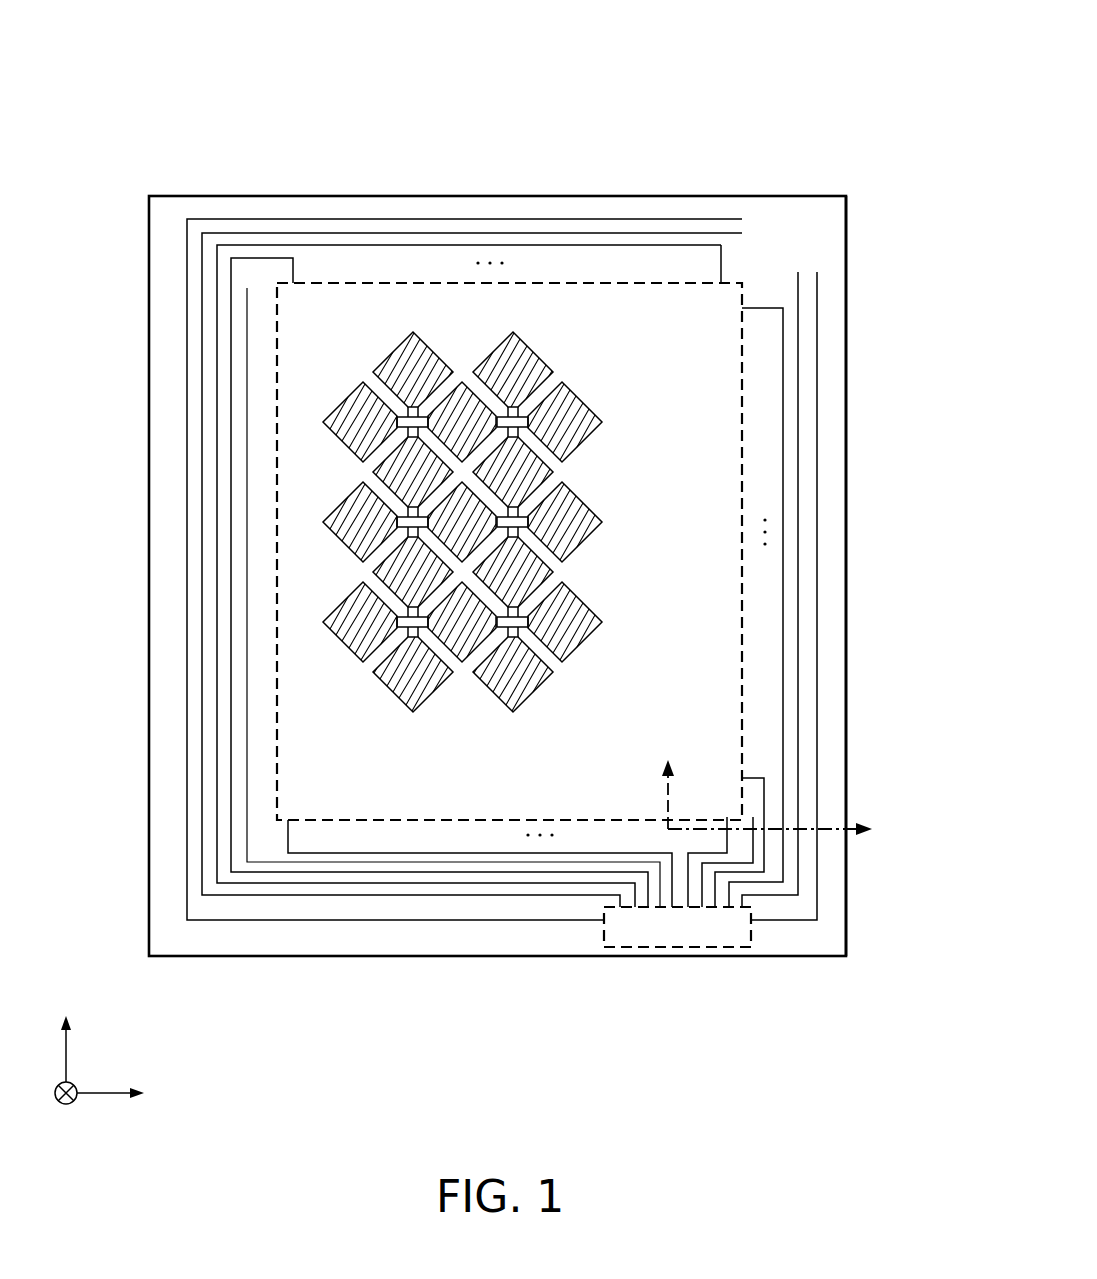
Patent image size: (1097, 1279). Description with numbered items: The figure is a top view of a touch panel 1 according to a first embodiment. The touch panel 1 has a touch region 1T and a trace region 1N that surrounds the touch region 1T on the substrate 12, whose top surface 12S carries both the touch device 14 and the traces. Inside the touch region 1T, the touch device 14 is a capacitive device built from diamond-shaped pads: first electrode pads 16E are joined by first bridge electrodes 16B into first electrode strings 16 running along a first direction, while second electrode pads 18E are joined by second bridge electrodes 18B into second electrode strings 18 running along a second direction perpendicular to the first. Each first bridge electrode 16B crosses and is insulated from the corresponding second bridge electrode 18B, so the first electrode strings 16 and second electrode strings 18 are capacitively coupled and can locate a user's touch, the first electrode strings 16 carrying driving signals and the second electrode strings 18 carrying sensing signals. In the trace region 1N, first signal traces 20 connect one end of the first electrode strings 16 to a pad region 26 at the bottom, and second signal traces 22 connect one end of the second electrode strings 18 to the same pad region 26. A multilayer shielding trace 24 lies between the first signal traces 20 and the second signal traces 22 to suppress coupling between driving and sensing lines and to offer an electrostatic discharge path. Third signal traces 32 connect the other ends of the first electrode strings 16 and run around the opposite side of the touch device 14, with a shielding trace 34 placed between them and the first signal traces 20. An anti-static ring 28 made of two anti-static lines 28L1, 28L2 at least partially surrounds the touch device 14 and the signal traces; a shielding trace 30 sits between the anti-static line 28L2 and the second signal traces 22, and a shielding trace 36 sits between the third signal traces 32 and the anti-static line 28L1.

The touch panel 1 is at (812, 78).
The trace region 1N is at (806, 217).
The touch region 1T is at (716, 384).
The substrate 12 is at (860, 248).
The top surface 12S is at (835, 238).
The touch device 14 is at (345, 152).
The first electrode strings 16 is at (391, 349).
The first electrode pads 16E is at (417, 362).
The first bridge electrodes 16B is at (420, 412).
The second electrode strings 18 is at (320, 423).
The second electrode pads 18E is at (567, 417).
The second bridge electrodes 18B is at (503, 410).
The first signal traces 20 is at (530, 855).
The second signal traces 22 is at (783, 712).
The shielding trace 24 is at (745, 865).
The pad region 26 is at (692, 941).
The anti-static ring 28 is at (498, 569).
The anti-static line 28L1 is at (187, 462).
The anti-static line 28L2 is at (817, 616).
The shielding trace 30 is at (799, 752).
The third signal traces 32 is at (337, 872).
The shielding trace 34 is at (275, 862).
The shielding trace 36 is at (202, 637).